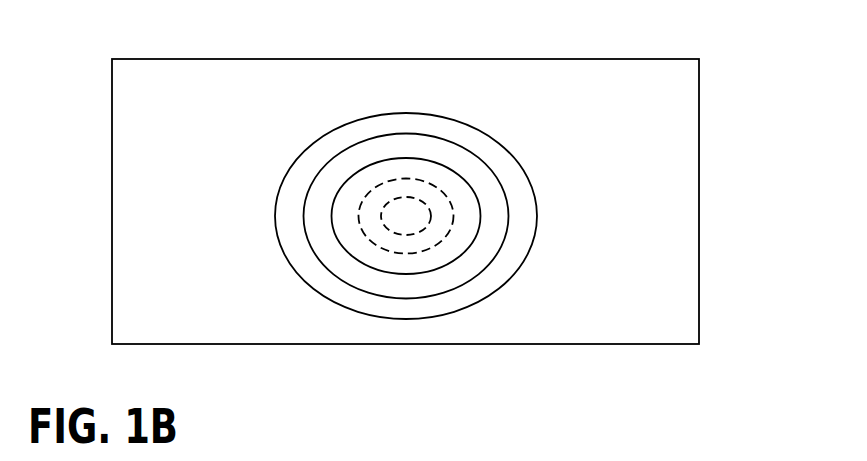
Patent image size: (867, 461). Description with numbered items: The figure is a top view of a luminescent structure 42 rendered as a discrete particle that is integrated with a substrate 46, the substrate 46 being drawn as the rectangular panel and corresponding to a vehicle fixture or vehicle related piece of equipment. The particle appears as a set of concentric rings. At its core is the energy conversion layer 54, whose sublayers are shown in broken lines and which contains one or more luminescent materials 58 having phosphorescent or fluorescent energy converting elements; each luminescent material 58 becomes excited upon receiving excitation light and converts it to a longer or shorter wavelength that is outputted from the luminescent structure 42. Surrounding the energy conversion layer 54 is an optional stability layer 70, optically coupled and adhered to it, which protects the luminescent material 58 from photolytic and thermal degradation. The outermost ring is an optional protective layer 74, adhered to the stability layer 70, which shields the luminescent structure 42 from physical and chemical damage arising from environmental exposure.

The luminescent structure 42 is at (411, 202).
The substrate 46 is at (700, 155).
The energy conversion layer 54 is at (458, 259).
The luminescent material 58 is at (392, 233).
The stability layer 70 is at (470, 152).
The protective layer 74 is at (442, 116).